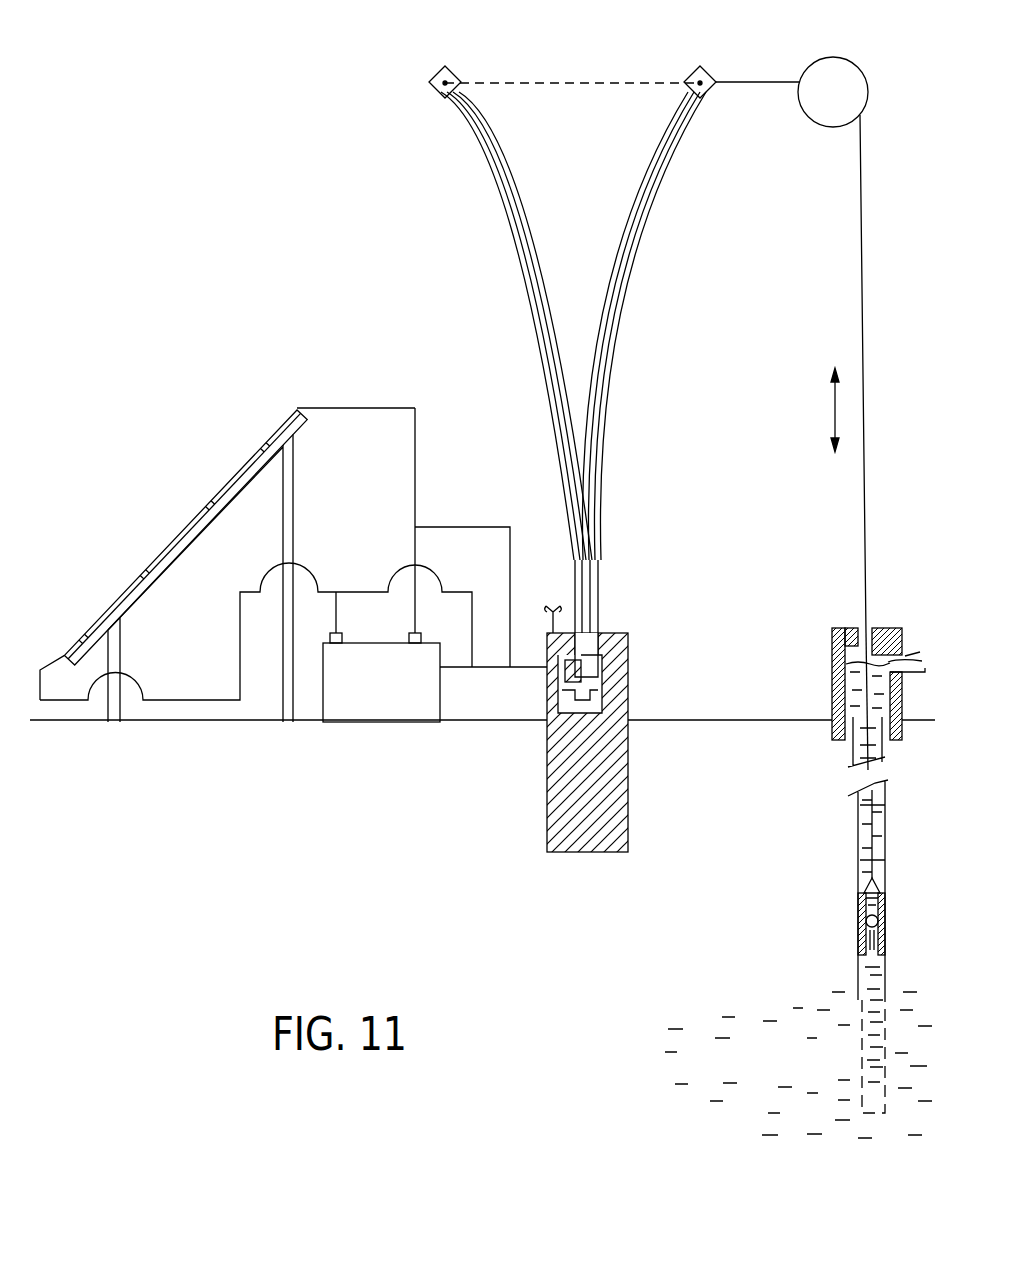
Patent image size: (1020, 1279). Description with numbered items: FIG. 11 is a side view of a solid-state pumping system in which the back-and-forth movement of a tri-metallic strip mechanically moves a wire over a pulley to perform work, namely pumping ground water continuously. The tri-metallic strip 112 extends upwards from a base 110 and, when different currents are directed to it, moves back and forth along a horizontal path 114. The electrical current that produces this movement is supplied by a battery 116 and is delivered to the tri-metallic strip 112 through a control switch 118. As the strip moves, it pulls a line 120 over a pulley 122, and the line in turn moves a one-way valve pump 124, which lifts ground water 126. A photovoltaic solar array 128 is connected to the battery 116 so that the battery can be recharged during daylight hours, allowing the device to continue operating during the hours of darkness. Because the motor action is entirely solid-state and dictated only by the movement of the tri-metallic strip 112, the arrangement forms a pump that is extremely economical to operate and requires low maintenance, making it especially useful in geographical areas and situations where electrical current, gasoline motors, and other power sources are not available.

The base 110 is at (624, 782).
The tri-metallic strip 112 is at (613, 327).
The horizontal path 114 is at (572, 84).
The battery 116 is at (377, 704).
The control switch 118 is at (482, 703).
The line 120 is at (758, 82).
The pulley 122 is at (833, 115).
The one-way valve pump 124 is at (858, 895).
The ground water 126 is at (808, 1032).
The photovoltaic solar array 128 is at (188, 516).